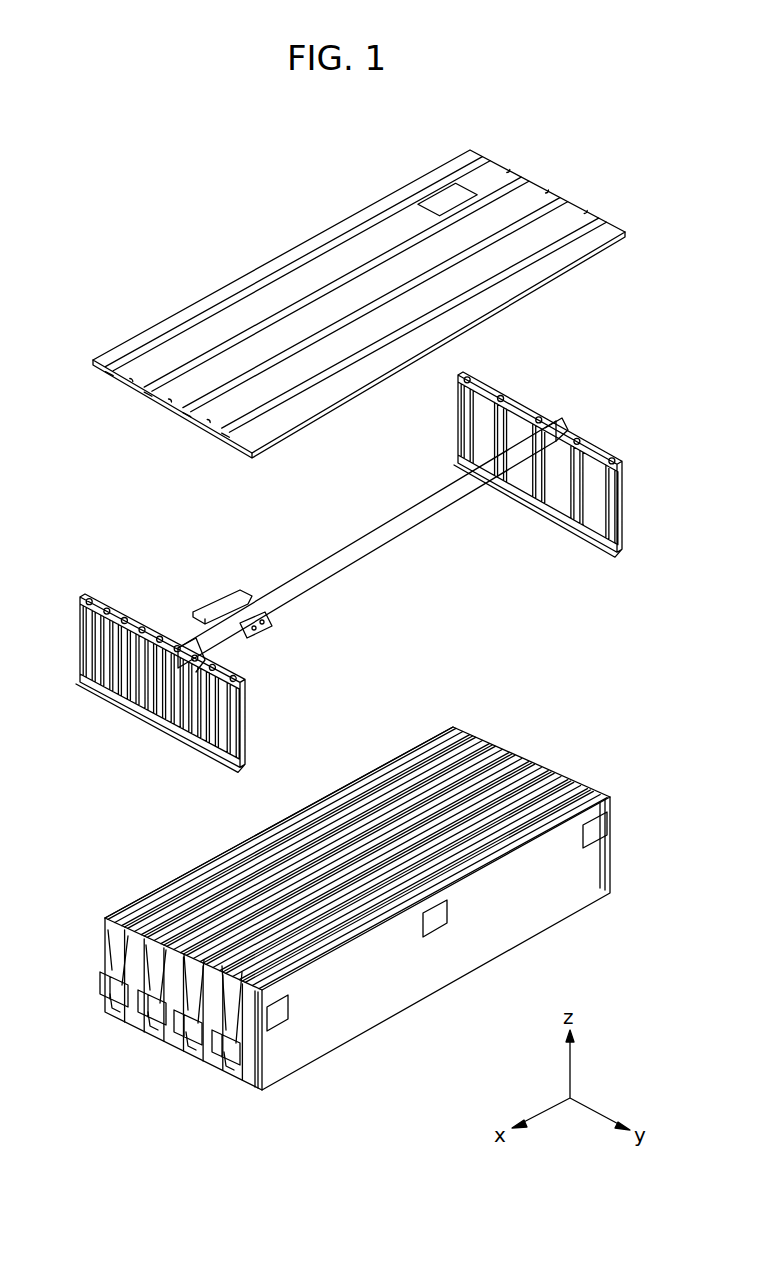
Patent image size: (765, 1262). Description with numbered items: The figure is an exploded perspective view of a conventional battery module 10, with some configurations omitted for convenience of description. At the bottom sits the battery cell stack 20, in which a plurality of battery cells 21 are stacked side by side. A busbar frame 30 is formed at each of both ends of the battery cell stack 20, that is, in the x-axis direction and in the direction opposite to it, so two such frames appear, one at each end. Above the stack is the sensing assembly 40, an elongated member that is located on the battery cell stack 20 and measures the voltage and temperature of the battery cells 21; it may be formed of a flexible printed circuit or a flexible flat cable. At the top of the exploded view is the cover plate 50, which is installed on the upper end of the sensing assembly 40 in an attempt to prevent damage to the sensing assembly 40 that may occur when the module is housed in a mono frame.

The battery module 10 is at (92, 160).
The battery cell stack 20 is at (160, 866).
The battery cell 21 is at (306, 1040).
The busbar frame 30 is at (628, 507).
The sensing assembly 40 is at (280, 595).
The cover plate 50 is at (232, 322).